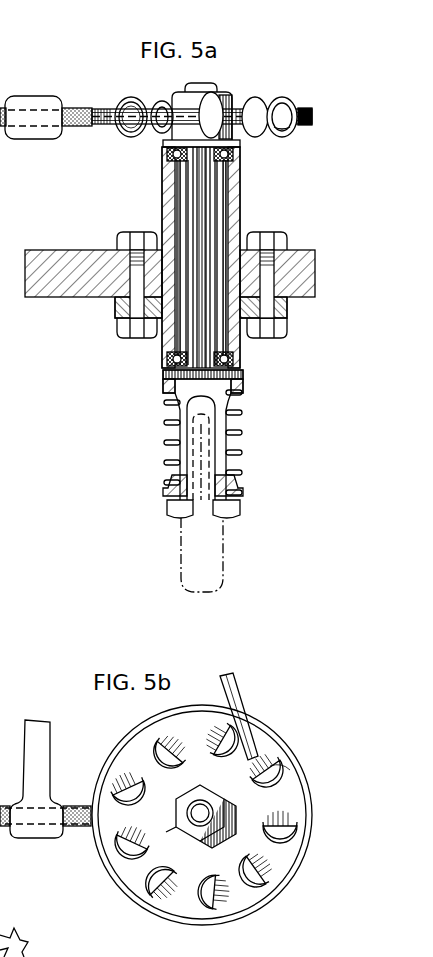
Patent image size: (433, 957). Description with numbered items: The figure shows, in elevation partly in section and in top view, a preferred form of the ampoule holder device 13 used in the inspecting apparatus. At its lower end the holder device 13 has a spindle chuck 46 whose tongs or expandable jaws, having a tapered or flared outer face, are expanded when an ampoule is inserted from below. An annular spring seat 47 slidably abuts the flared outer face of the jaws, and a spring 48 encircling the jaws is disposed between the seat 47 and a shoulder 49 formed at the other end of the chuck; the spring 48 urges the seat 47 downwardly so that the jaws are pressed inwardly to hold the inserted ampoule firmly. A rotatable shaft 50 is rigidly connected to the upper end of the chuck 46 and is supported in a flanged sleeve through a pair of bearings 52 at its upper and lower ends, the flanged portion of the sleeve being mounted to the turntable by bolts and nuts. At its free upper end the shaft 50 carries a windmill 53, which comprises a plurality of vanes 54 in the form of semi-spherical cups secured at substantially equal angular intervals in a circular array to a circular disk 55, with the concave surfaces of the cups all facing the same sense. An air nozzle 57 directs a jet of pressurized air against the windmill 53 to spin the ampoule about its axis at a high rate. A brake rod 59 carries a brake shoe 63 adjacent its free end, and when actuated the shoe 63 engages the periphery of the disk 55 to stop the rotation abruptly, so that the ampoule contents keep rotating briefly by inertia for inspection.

In FIG. 5A, the ampoule holder device 13 is at (281, 197).
In FIG. 5A, the spindle chuck 46 is at (178, 500).
In FIG. 5A, the annular spring seat 47 is at (172, 479).
In FIG. 5A, the spring 48 is at (164, 429).
In FIG. 5A, the shoulder 49 is at (163, 383).
In FIG. 5A, the rotatable shaft 50 is at (193, 182).
In FIG. 5A, the bearings 52 is at (168, 152).
In FIG. 5A, the windmill 53 is at (257, 98).
In FIG. 5B, the windmill 53 is at (147, 912).
In FIG. 5A, the vanes 54 is at (283, 100).
In FIG. 5B, the vanes 54 is at (282, 766).
In FIG. 5A, the circular disk 55 is at (110, 108).
In FIG. 5B, the circular disk 55 is at (145, 750).
In FIG. 5B, the air nozzle 57 is at (241, 695).
In FIG. 5A, the brake rod 59 is at (45, 96).
In FIG. 5B, the brake rod 59 is at (51, 794).
In FIG. 5A, the brake shoe 63 is at (78, 108).
In FIG. 5B, the brake shoe 63 is at (78, 830).